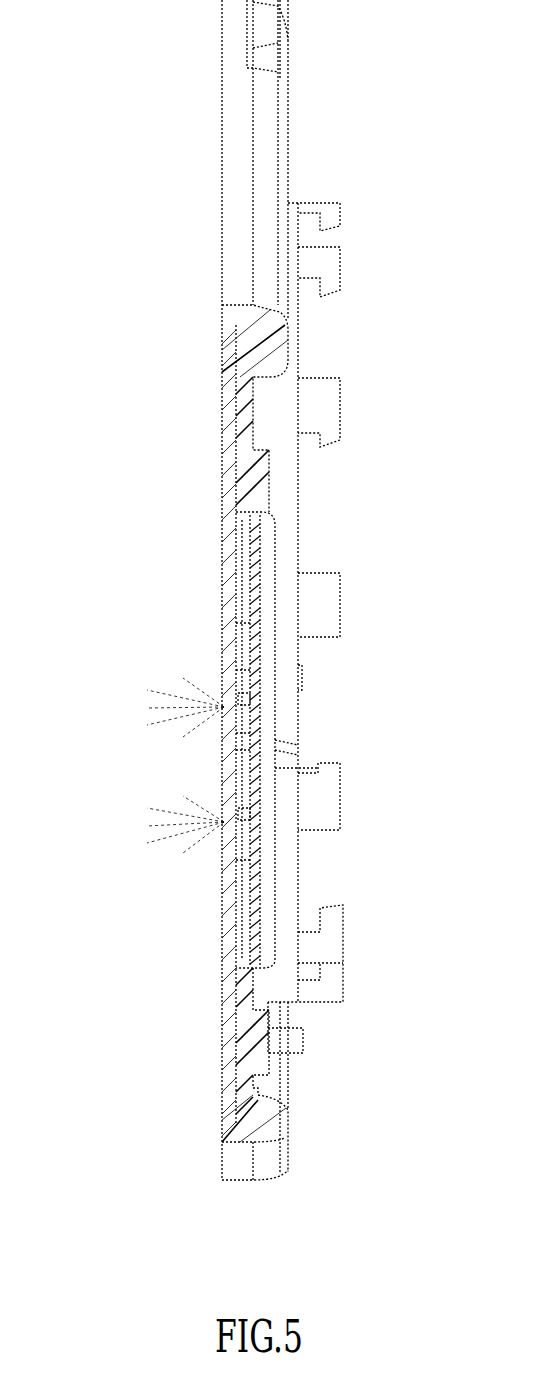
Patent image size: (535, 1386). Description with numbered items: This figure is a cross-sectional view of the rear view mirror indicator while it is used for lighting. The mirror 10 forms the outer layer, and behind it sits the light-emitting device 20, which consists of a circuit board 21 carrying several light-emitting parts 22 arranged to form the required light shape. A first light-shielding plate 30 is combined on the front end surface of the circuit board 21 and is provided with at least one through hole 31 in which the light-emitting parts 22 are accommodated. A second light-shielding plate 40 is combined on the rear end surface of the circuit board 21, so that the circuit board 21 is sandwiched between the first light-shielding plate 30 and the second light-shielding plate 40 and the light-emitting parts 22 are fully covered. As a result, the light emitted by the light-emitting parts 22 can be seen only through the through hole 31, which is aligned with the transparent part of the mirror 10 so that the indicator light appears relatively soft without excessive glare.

The mirror 10 is at (222, 420).
The light-emitting device 20 is at (246, 900).
The circuit board 21 is at (260, 793).
The light-emitting parts 22 is at (245, 702).
The first light-shielding plate 30 is at (243, 583).
The through hole 31 is at (240, 690).
The second light-shielding plate 40 is at (268, 548).